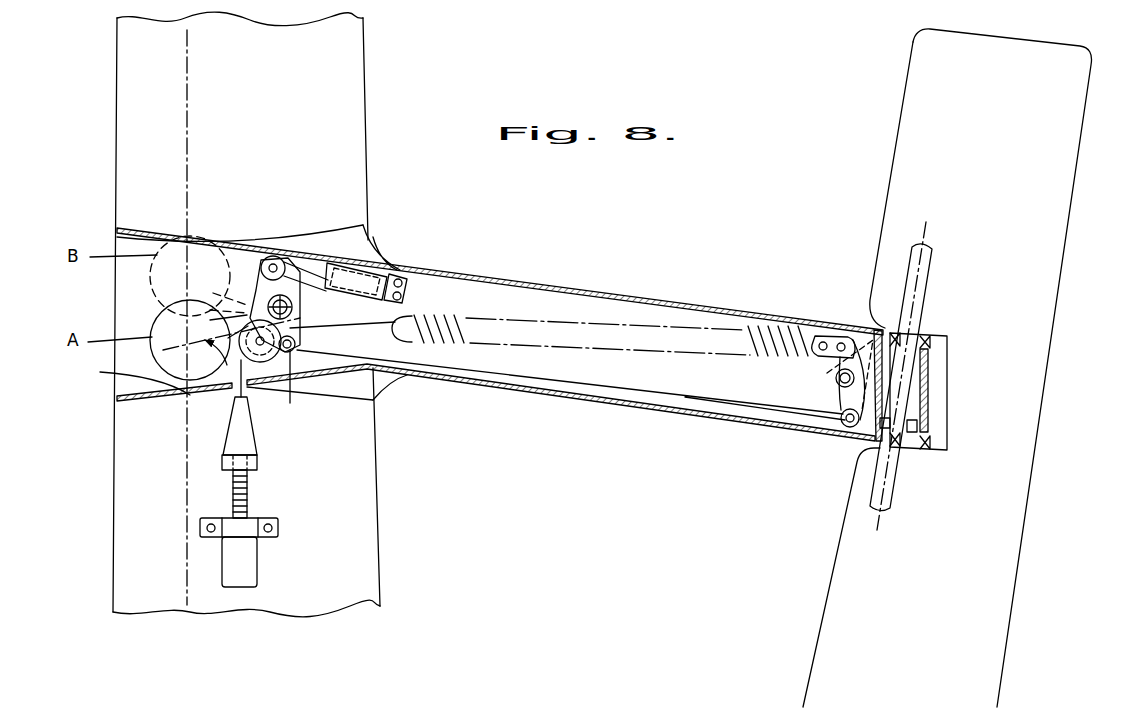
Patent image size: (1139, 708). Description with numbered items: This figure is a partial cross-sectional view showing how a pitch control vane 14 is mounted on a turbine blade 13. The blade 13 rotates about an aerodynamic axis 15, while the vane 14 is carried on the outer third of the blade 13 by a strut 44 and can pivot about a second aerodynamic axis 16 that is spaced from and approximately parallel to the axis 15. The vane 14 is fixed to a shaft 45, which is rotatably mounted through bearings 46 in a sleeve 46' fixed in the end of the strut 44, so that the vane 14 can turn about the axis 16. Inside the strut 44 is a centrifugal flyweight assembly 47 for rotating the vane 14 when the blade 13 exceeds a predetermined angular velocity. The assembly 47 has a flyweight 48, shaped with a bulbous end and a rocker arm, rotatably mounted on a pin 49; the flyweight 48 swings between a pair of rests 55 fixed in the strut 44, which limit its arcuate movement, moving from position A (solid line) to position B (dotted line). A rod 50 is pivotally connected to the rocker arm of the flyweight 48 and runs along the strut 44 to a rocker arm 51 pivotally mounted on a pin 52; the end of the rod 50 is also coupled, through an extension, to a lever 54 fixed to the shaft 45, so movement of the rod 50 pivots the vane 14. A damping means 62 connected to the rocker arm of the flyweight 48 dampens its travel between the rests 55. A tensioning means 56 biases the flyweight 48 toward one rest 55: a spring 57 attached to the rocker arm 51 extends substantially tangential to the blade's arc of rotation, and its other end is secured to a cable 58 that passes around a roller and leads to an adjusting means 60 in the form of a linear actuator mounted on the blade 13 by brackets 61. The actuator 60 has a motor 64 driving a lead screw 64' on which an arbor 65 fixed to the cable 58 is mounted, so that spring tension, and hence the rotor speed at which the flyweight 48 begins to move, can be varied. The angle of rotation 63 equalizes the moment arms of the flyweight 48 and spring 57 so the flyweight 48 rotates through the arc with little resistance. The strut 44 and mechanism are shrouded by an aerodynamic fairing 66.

The blade 13 is at (122, 524).
The pitch control vane 14 is at (1050, 250).
The aerodynamic axis of the blade 15 is at (183, 592).
The aerodynamic axis of the vane 16 is at (883, 513).
The strut 44 is at (613, 293).
The shaft 45 is at (920, 273).
The bearings 46 is at (946, 400).
The sleeve 46' is at (961, 390).
The centrifugal flyweight assembly 47 is at (147, 313).
The flyweight 48 is at (157, 365).
The pin 49 is at (283, 308).
The rod 50 is at (517, 383).
The rocker arm 51 is at (840, 397).
The pin 52 is at (838, 377).
The lever 54 is at (913, 428).
The rests 55 is at (167, 237).
The tensioning means 56 is at (236, 457).
The spring 57 is at (448, 318).
The cable 58 is at (327, 328).
The adjusting means 60 is at (235, 549).
The brackets 61 is at (280, 523).
The damping means 62 is at (380, 262).
The angle of rotation 63 is at (270, 403).
The motor 64 is at (272, 562).
The lead screw 64' is at (193, 494).
The arbor 65 is at (258, 460).
The aerodynamic fairing 66 is at (373, 237).